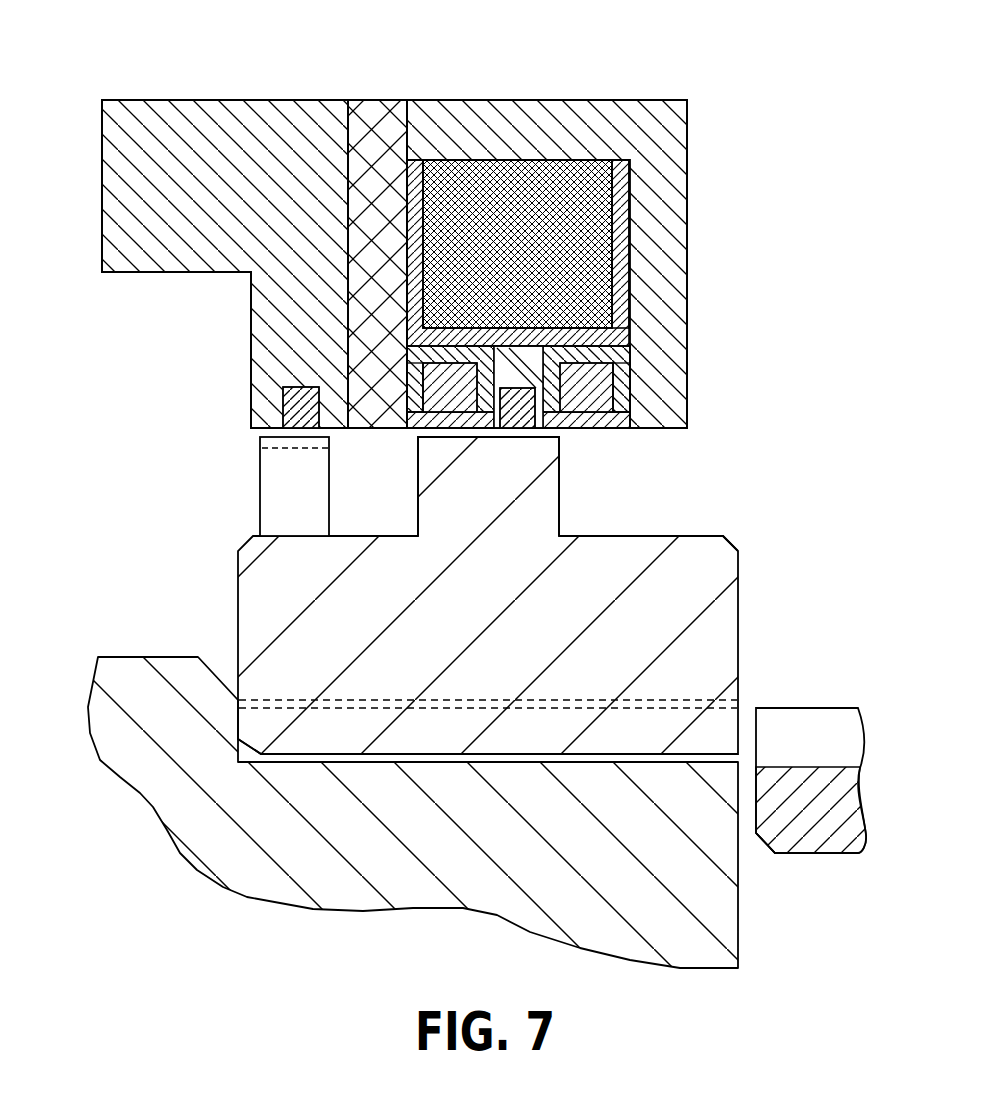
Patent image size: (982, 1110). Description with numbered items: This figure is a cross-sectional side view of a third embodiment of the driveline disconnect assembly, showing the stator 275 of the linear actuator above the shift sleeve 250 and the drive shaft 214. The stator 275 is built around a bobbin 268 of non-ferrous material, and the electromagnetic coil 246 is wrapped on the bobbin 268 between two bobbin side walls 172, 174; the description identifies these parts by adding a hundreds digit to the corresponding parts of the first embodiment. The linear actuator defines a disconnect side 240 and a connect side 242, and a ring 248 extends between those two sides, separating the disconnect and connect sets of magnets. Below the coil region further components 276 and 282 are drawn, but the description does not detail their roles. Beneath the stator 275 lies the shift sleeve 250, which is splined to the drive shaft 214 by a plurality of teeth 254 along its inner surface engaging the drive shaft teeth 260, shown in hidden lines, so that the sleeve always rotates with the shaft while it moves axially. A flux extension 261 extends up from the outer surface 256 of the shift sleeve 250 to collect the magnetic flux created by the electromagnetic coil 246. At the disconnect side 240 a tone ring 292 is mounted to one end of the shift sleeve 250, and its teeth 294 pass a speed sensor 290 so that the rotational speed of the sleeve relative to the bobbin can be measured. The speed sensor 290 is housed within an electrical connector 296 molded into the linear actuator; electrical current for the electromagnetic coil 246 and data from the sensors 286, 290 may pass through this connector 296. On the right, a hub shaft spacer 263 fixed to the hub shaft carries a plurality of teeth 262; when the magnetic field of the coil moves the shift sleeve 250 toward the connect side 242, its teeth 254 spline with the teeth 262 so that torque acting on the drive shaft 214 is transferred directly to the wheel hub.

The electrical connector 296 is at (212, 100).
The disconnect side 240 is at (348, 187).
The bobbin side wall 172 is at (407, 208).
The electromagnetic coil 246 is at (571, 160).
The stator 275 is at (687, 133).
The connect side 242 is at (688, 182).
The bobbin 268 is at (632, 218).
The bobbin side wall 174 is at (630, 273).
The ring 248 is at (558, 373).
The retainer 282 is at (582, 410).
The sensor 286 is at (615, 387).
The spacer 276 is at (447, 412).
The speed sensor 290 is at (285, 405).
The teeth 294 is at (260, 437).
The tone ring 292 is at (260, 489).
The flux extension 261 is at (560, 448).
The outer surface 256 is at (700, 536).
The shift sleeve 250 is at (738, 565).
The drive shaft 214 is at (127, 657).
The drive shaft teeth 260 is at (683, 706).
The plurality of teeth 262 is at (805, 767).
The hub shaft spacer 263 is at (820, 853).
The plurality of teeth 254 is at (244, 752).